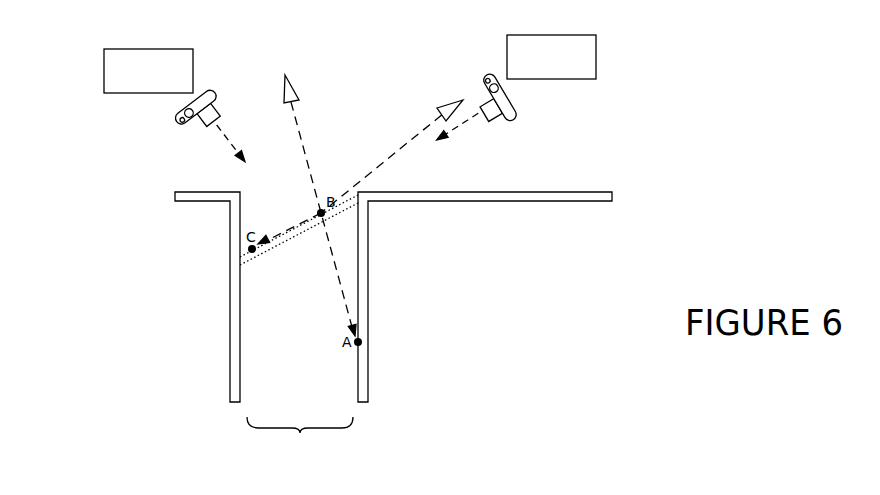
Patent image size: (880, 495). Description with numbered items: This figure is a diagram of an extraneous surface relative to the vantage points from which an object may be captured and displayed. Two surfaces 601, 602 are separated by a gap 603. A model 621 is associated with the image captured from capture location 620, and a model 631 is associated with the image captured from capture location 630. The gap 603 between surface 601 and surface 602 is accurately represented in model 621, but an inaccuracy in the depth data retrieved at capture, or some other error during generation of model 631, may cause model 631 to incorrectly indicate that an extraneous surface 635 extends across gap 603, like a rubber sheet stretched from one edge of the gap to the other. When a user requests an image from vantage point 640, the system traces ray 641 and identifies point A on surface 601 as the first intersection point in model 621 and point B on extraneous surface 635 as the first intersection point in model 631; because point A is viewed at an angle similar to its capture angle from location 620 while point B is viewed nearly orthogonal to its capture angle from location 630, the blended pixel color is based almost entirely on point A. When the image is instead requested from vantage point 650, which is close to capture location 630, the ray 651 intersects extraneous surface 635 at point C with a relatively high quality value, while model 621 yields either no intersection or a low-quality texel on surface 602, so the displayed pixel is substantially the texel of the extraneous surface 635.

The surface 601 is at (363, 380).
The surface 602 is at (238, 382).
The gap 603 is at (328, 428).
The capture location 620 is at (177, 129).
The model 621 is at (104, 74).
The capture location 630 is at (517, 113).
The model 631 is at (597, 56).
The extraneous surface 635 is at (343, 198).
The vantage point 640 is at (293, 80).
The ray 641 is at (343, 283).
The vantage point 650 is at (450, 103).
The ray 651 is at (393, 148).